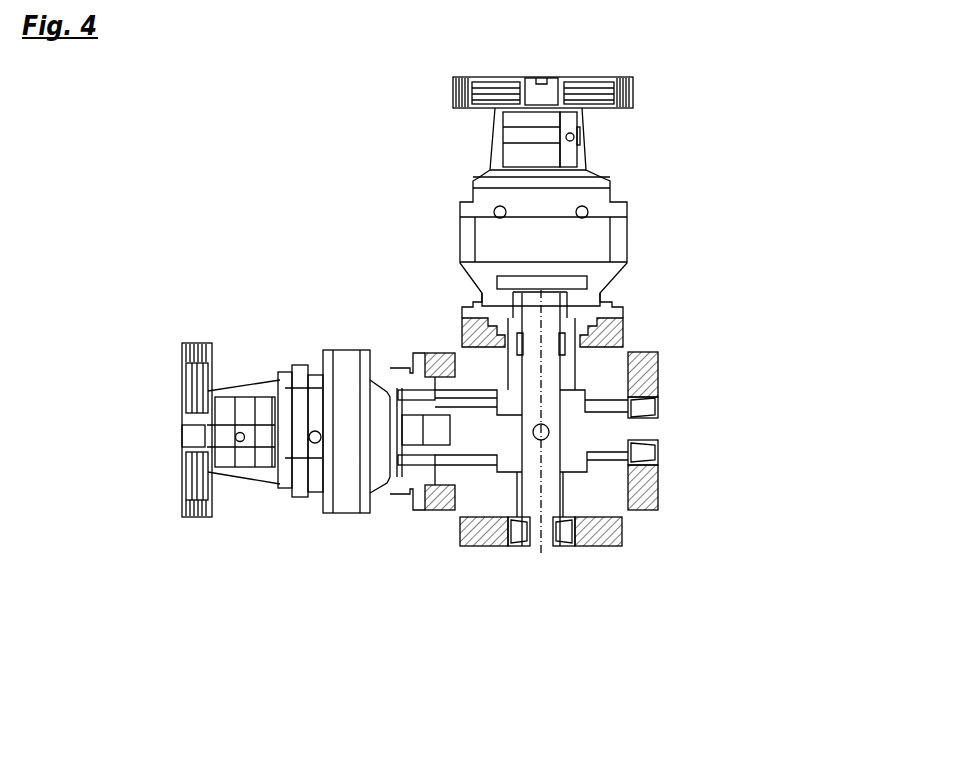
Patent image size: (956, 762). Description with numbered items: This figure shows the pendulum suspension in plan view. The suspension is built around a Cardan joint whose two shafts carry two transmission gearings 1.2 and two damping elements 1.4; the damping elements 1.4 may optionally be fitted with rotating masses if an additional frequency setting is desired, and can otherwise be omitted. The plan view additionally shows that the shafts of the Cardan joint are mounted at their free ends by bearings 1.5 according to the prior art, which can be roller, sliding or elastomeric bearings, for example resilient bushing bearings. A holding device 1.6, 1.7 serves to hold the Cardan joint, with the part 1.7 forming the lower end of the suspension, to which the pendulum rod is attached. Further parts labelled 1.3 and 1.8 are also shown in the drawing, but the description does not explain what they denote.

The transmission gearing 1.2 is at (345, 360).
The shaft 1.3 is at (548, 442).
The damping element 1.4 is at (626, 108).
The bearing 1.5 is at (620, 528).
The holding device 1.6 is at (440, 398).
The holding device 1.7 is at (610, 323).
The bearing block 1.8 is at (423, 502).